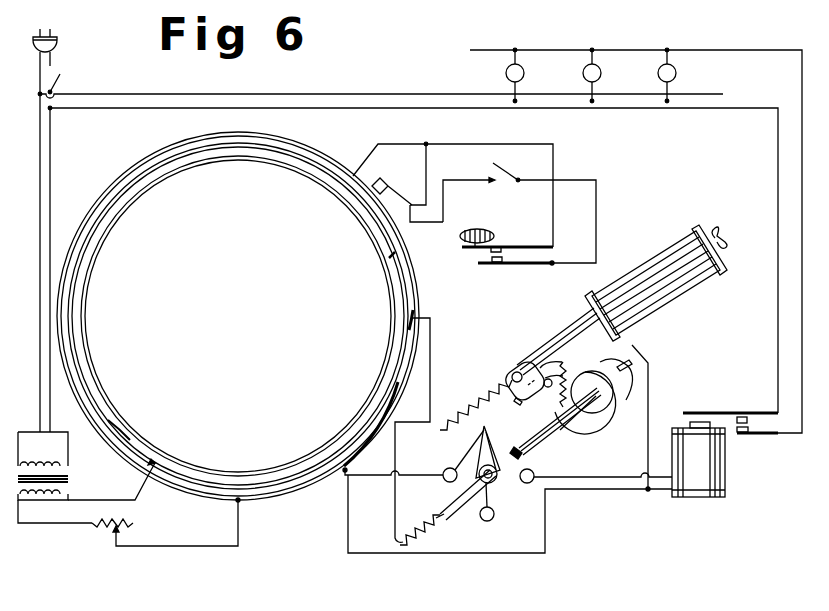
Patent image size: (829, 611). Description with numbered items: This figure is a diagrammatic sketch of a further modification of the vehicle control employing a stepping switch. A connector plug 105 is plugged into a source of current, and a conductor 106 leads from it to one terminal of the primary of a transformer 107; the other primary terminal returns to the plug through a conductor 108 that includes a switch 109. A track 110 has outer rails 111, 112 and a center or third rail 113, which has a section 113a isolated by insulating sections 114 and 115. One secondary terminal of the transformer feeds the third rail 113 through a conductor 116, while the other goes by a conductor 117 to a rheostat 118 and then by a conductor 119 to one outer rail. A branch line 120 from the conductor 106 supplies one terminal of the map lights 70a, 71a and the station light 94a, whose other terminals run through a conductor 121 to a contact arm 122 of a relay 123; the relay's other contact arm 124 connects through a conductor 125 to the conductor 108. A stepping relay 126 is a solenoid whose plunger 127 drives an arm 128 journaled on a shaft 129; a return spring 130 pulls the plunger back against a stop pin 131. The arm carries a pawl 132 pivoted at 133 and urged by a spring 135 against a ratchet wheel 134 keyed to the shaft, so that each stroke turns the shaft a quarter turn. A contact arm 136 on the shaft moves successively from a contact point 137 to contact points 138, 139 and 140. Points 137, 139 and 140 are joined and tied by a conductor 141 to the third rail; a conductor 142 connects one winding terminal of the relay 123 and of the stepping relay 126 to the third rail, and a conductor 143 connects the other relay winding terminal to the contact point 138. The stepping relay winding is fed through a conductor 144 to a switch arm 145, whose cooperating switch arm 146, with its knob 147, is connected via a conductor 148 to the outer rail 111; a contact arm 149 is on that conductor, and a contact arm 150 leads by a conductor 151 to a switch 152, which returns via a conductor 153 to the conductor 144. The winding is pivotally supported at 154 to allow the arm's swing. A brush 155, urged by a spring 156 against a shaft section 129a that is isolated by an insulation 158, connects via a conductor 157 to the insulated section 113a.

The connector plug 105 is at (58, 45).
The conductor 106 is at (28, 242).
The transformer 107 is at (70, 478).
The conductor 108 is at (50, 178).
The switch 109 is at (62, 78).
The track 110 is at (150, 427).
The outer rail 111 is at (103, 436).
The outer rail 112 is at (86, 291).
The third rail 113 is at (112, 205).
The isolated section of third rail 113a is at (416, 312).
The insulating section 114 is at (395, 255).
The insulating section 115 is at (392, 381).
The conductor 116 is at (140, 492).
The conductor 117 is at (38, 525).
The rheostat 118 is at (135, 521).
The conductor 119 is at (212, 546).
The branch line 120 is at (262, 96).
The conductor 121 is at (800, 68).
The contact arm 122 is at (760, 436).
The relay 123 is at (725, 468).
The contact arm 124 is at (766, 410).
The conductor 125 is at (712, 117).
The stepping relay 126 is at (657, 338).
The plunger 127 is at (560, 318).
The arm 128 is at (546, 394).
The shaft 129 is at (548, 432).
The shaft section 129a is at (466, 496).
The return spring 130 is at (466, 402).
The stop pin 131 is at (514, 405).
The pawl 132 is at (582, 368).
The pivot 133 is at (548, 390).
The ratchet wheel 134 is at (610, 406).
The spring 135 is at (568, 425).
The contact arm 136 is at (500, 480).
The contact point 137 is at (484, 432).
The contact point 138 is at (534, 474).
The contact point 139 is at (490, 520).
The contact point 140 is at (447, 482).
The conductor 141 is at (412, 470).
The conductor 142 is at (458, 556).
The conductor 143 is at (574, 474).
The conductor 144 is at (588, 268).
The switch arm 145 is at (518, 266).
The switch arm 146 is at (520, 245).
The knob 147 is at (478, 228).
The conductor 148 is at (553, 160).
The contact arm 149 is at (395, 185).
The contact arm 150 is at (418, 214).
The conductor 151 is at (448, 180).
The switch 152 is at (505, 180).
The conductor 153 is at (594, 210).
The pivotal support 154 is at (722, 230).
The brush 155 is at (448, 522).
The spring 156 is at (420, 523).
The conductor 157 is at (430, 370).
The insulation 158 is at (520, 456).
The map light 70a is at (523, 70).
The map light 71a is at (600, 70).
The station light 94a is at (675, 70).